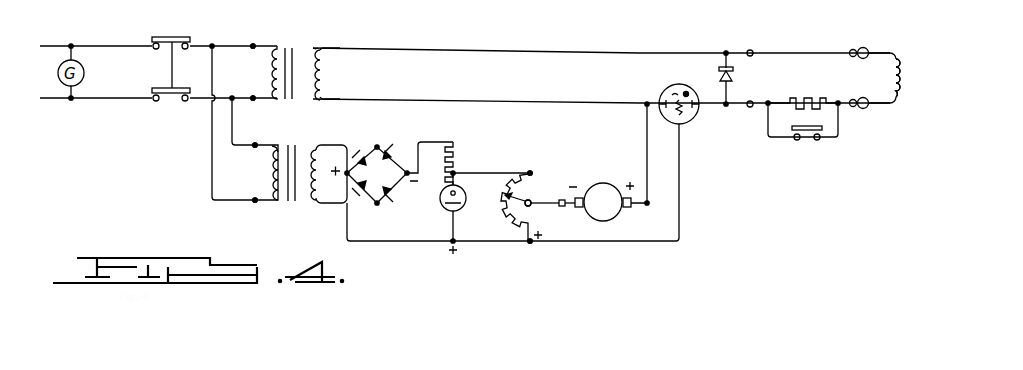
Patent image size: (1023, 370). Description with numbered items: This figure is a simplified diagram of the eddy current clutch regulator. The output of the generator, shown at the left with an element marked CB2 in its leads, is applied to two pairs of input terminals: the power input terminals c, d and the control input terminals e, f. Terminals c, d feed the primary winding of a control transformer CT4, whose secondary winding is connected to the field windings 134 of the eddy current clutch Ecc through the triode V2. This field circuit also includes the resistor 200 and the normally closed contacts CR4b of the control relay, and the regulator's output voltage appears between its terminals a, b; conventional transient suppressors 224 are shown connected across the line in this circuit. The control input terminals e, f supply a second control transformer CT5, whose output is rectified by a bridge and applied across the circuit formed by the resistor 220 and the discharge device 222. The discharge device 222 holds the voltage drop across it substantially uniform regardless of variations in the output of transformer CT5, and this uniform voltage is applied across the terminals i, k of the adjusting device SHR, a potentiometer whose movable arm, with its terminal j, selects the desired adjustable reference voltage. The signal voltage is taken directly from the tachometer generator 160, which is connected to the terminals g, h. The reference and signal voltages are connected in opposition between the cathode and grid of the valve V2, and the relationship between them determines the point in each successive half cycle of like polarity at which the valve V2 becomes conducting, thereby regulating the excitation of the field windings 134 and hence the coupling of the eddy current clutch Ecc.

The circuit breaker CB2 is at (178, 36).
The control transformer CT4 is at (300, 48).
The control transformer CT5 is at (293, 205).
The power input terminal c is at (255, 45).
The power input terminal d is at (254, 97).
The control input terminal e is at (256, 143).
The control input terminal f is at (255, 198).
The resistor 220 is at (460, 148).
The discharge device 222 is at (442, 210).
The adjusting device SHR is at (512, 222).
The adjusting device terminal i is at (531, 172).
The rheostat arm terminal j is at (531, 201).
The signal input terminal g is at (562, 207).
The adjusting device terminal k is at (531, 243).
The signal input terminal h is at (647, 206).
The tachometer generator 160 is at (603, 221).
The triode V2 is at (684, 84).
The transient suppressor 224 is at (740, 70).
The output terminal a is at (752, 50).
The output terminal b is at (750, 101).
The resistor 200 is at (802, 97).
The normally closed contacts of control relay CR4b is at (806, 140).
The field windings 134 is at (906, 100).
The eddy current clutch Ecc is at (914, 74).